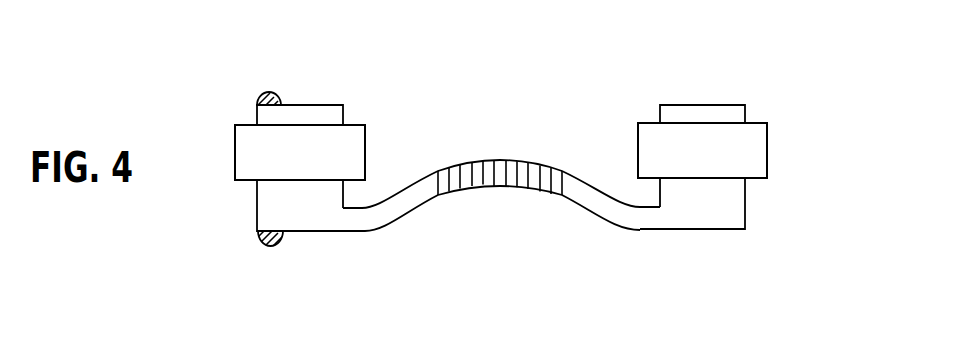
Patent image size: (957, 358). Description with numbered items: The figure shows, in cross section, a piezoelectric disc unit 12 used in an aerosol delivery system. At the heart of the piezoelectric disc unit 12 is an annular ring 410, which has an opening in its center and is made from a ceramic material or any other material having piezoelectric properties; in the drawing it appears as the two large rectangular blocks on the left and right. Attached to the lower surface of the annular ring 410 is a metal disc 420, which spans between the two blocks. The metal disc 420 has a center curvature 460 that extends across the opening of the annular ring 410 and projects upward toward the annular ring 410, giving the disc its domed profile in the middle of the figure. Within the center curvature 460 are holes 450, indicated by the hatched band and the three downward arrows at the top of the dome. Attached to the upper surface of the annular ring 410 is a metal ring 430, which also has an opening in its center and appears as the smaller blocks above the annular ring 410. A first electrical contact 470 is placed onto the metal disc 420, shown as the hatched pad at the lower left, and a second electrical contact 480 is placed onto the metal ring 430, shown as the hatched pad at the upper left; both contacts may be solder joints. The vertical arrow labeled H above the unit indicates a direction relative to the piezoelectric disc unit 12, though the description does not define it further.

The piezoelectric disc unit 12 is at (362, 262).
The annular ring 410 is at (752, 149).
The metal disc 420 is at (737, 212).
The metal ring 430 is at (745, 109).
The holes 450 is at (536, 148).
The center curvature 460 is at (512, 216).
The first electrical contact 470 is at (251, 262).
The second electrical contact 480 is at (250, 82).
The height direction H is at (500, 0).